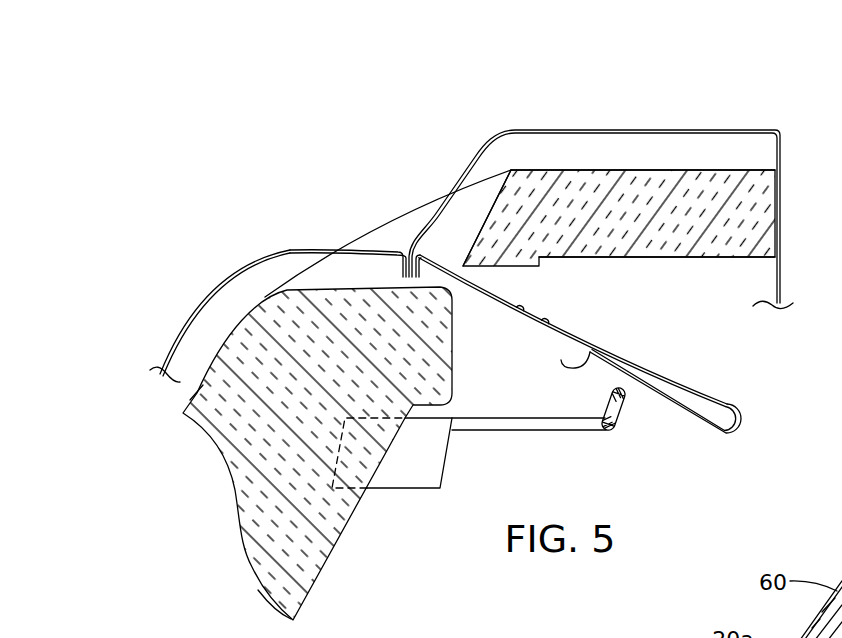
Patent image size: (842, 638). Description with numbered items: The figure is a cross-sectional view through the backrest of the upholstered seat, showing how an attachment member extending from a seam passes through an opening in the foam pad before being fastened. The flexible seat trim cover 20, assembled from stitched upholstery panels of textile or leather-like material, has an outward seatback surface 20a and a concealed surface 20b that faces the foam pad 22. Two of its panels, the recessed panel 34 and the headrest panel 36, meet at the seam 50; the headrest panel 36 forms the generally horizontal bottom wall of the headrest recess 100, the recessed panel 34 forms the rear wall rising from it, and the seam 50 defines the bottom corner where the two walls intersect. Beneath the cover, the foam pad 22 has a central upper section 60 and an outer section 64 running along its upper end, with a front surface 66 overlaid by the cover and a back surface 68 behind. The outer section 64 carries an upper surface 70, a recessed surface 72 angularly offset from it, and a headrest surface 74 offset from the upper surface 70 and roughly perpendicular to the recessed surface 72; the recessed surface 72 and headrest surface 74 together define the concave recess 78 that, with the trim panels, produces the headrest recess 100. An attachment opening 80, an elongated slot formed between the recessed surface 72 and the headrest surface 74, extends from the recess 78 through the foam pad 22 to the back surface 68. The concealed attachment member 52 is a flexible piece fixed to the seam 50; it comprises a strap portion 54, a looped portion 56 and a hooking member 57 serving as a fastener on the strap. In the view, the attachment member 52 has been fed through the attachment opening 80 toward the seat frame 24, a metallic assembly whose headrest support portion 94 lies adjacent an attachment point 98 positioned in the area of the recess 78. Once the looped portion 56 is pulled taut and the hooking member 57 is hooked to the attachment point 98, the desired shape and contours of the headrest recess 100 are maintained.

The flexible seat trim cover 20 is at (574, 103).
The seatback surface 20a is at (228, 277).
The concealed surface 20b is at (200, 388).
The foam pad 22 is at (661, 268).
The seat frame 24 is at (464, 464).
The recessed panel 34 is at (500, 131).
The headrest panel 36 is at (287, 248).
The seam 50 is at (403, 268).
The attachment member 52 is at (628, 327).
The strap portion 54 is at (489, 289).
The looped portion 56 is at (717, 405).
The hooking member 57 is at (572, 375).
The central upper section 60 is at (246, 322).
The outer section 64 is at (745, 215).
The front surface 66 is at (188, 399).
The back surface 68 is at (313, 582).
The upper surface 70 is at (702, 169).
The recessed surface 72 is at (485, 213).
The headrest surface 74 is at (317, 289).
The recess 78 is at (416, 205).
The attachment opening 80 is at (453, 292).
The headrest support portion 94 is at (407, 468).
The attachment point 98 is at (621, 410).
The headrest recess 100 is at (349, 216).